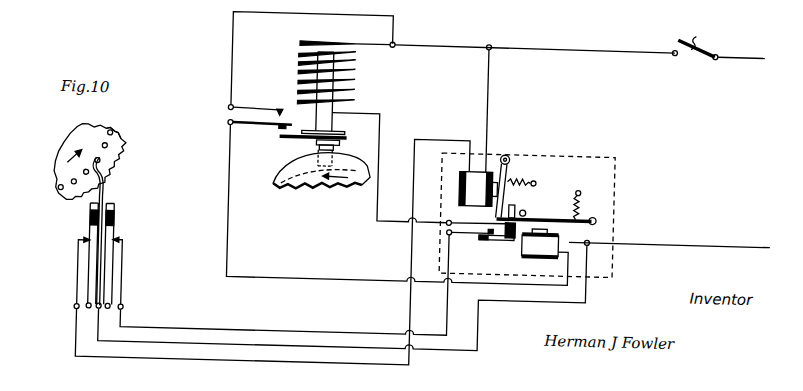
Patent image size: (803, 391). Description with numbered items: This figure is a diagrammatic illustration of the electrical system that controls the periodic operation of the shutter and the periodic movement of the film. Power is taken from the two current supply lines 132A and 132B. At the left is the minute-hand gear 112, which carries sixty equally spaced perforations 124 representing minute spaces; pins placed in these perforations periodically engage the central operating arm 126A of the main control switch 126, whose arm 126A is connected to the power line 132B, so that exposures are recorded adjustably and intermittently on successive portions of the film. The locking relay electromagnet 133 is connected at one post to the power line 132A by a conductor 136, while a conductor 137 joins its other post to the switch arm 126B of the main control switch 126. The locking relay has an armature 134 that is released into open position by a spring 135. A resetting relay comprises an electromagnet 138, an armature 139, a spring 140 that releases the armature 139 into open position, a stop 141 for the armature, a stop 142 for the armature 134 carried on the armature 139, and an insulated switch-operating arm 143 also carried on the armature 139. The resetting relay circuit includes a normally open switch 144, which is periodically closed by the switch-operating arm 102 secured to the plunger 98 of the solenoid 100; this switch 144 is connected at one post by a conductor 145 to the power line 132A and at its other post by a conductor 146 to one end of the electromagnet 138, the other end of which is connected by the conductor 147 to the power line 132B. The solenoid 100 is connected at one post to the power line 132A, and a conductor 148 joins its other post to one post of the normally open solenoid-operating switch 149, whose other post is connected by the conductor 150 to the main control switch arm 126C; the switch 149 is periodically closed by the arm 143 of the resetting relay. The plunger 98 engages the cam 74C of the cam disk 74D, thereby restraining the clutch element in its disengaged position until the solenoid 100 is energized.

The cam 74C is at (359, 187).
The cam disk 74D is at (284, 190).
The solenoid plunger 98 is at (339, 148).
The solenoid 100 is at (345, 74).
The switch-operating arm 102 is at (283, 142).
The minute-hand gear 112 is at (77, 143).
The perforations 124 is at (116, 132).
The main control switch 126 is at (114, 229).
The central operating arm 126A is at (105, 193).
The switch arm 126B is at (79, 263).
The main control switch arm 126C is at (123, 262).
The current supply line 132A is at (459, 44).
The current supply line 132B is at (342, 350).
The locking relay electromagnet 133 is at (472, 180).
The armature 134 is at (508, 156).
The spring 135 is at (531, 176).
The conductor 136 is at (488, 77).
The conductor 137 is at (439, 139).
The electromagnet 138 is at (523, 245).
The armature 139 is at (584, 212).
The spring 140 is at (586, 200).
The stop 141 is at (526, 209).
The stop 142 is at (514, 202).
The insulated switch-operating arm 143 is at (500, 238).
The normally open switch 144 is at (226, 133).
The conductor 145 is at (228, 37).
The conductor 146 is at (352, 283).
The conductor 147 is at (575, 232).
The conductor 148 is at (381, 121).
The solenoid-operating switch 149 is at (447, 234).
The conductor 150 is at (446, 316).